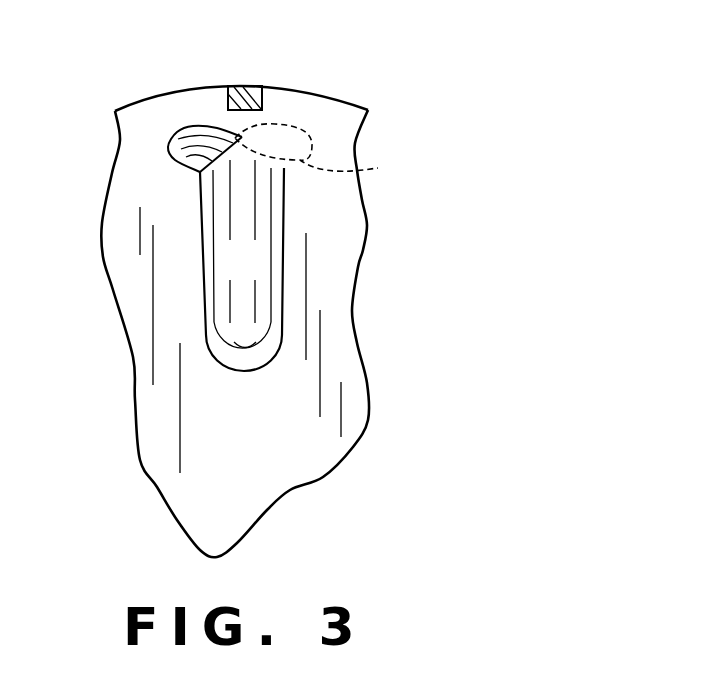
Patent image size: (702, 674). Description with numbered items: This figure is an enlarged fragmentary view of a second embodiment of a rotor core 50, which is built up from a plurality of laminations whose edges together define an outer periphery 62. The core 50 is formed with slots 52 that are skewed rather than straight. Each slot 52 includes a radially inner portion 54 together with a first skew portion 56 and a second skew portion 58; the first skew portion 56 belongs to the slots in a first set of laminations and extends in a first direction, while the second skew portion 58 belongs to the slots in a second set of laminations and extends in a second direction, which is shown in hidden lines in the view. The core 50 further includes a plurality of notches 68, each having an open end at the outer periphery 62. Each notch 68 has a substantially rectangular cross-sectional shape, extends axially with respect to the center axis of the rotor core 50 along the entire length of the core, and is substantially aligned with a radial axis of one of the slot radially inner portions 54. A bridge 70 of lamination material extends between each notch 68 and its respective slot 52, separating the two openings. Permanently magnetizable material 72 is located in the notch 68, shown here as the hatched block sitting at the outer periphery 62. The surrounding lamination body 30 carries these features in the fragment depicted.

The cushion body 30 is at (337, 362).
The rotor core 50 is at (352, 262).
The slots 52 is at (186, 305).
The radially inner portion 54 is at (258, 268).
The first skew portion 56 is at (170, 153).
The second skew portion 58 is at (323, 153).
The outer periphery 62 is at (358, 104).
The notch 68 is at (210, 101).
The bridge 70 is at (243, 124).
The permanently magnetizable material 72 is at (238, 86).